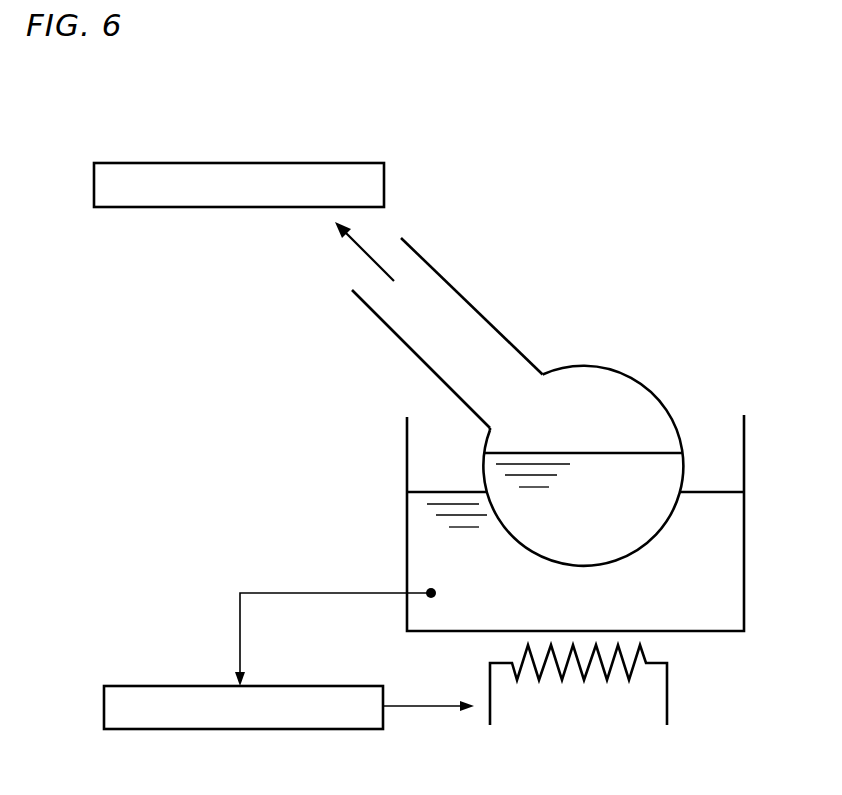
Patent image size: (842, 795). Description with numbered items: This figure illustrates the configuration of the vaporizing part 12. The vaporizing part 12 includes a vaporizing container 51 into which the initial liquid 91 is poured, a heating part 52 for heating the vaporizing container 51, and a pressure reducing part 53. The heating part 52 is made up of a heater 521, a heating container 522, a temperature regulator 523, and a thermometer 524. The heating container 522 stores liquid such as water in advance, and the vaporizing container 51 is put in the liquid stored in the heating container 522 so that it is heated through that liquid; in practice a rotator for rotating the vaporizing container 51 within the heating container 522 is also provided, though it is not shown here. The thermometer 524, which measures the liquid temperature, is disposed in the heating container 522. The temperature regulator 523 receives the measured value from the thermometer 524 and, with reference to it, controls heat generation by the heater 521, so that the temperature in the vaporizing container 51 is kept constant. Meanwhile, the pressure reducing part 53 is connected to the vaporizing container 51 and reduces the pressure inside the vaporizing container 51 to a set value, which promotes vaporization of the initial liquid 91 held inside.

The vaporizing part 12 is at (156, 97).
The vaporizing container 51 is at (493, 327).
The heating part 52 is at (260, 558).
The pressure reducing part 53 is at (384, 179).
The initial liquid 91 is at (655, 463).
The heater 521 is at (577, 702).
The heating container 522 is at (407, 508).
The temperature regulator 523 is at (160, 685).
The thermometer 524 is at (431, 590).